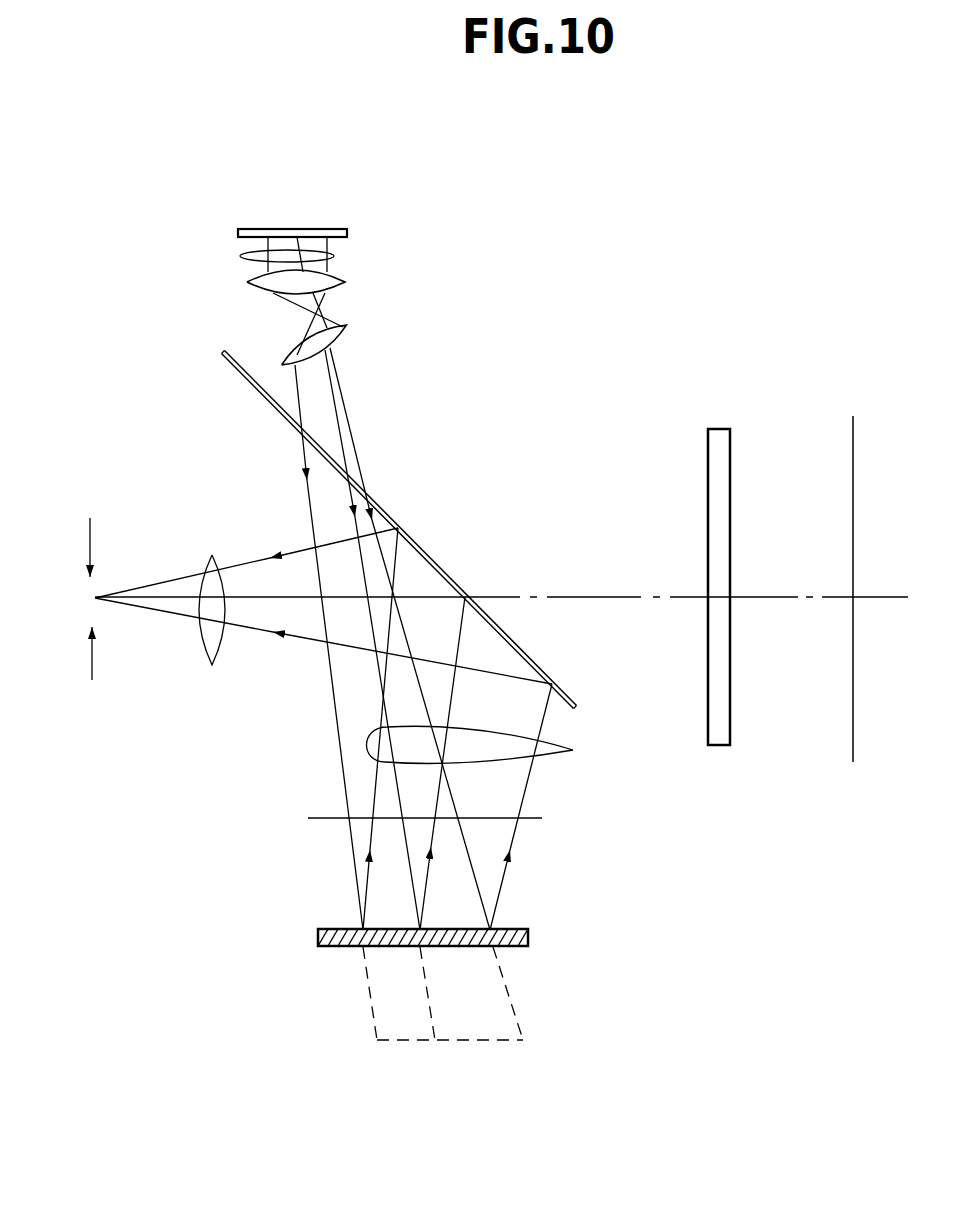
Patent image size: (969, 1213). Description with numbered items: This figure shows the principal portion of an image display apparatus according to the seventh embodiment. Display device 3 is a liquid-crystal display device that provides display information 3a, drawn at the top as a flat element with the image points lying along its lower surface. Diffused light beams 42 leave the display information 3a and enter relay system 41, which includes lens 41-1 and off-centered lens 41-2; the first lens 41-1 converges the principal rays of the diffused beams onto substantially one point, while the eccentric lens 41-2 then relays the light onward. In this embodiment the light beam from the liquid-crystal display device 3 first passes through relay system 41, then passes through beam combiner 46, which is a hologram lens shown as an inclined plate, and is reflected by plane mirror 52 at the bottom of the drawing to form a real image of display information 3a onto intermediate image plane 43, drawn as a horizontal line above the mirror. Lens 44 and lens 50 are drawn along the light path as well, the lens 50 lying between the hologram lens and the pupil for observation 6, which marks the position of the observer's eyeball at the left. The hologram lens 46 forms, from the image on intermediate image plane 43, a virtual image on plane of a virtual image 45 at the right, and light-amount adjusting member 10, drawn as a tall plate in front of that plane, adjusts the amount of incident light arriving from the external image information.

The display device 3 is at (347, 233).
The display information 3a is at (346, 238).
The diffused light beams 42 is at (253, 257).
The relay system 41 is at (369, 318).
The lens 41-1 is at (341, 281).
The off-centered lens 41-2 is at (347, 344).
The beam combiner 46 is at (432, 554).
The pupil for observation 6 is at (75, 599).
The eyepiece lens 50 is at (210, 629).
The imaging lens 44 is at (573, 750).
The intermediate image plane 43 is at (449, 815).
The plane mirror 52 is at (447, 975).
The light-amount adjusting member 10 is at (714, 428).
The plane of a virtual image 45 is at (854, 573).